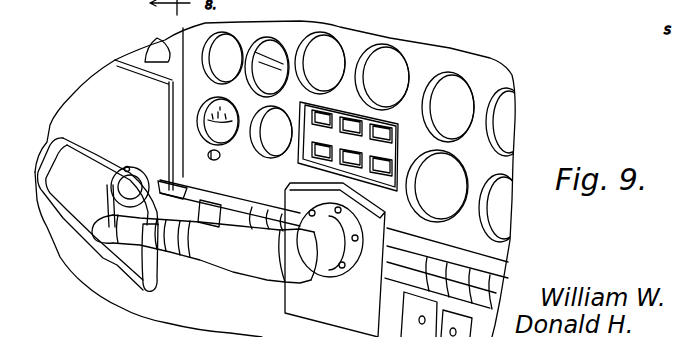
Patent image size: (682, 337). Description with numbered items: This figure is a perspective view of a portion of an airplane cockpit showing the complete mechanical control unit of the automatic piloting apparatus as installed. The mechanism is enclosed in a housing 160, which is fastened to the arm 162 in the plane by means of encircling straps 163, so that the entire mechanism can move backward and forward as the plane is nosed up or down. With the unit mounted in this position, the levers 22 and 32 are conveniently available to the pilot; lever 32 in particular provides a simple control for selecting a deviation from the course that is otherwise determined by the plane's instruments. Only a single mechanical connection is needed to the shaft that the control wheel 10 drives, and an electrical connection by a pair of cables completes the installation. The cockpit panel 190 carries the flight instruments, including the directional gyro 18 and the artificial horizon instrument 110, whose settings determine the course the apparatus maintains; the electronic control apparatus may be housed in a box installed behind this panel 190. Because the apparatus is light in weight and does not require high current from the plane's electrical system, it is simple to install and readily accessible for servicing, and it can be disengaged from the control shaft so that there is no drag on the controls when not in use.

The control wheel 10 is at (100, 250).
The directional gyro instrument 18 is at (237, 153).
The lever 22 is at (192, 185).
The lever 32 is at (127, 168).
The artificial horizon instrument 110 is at (300, 80).
The housing 160 is at (213, 223).
The arm 162 is at (230, 279).
The encircling straps 163 is at (181, 233).
The panel 190 is at (497, 74).